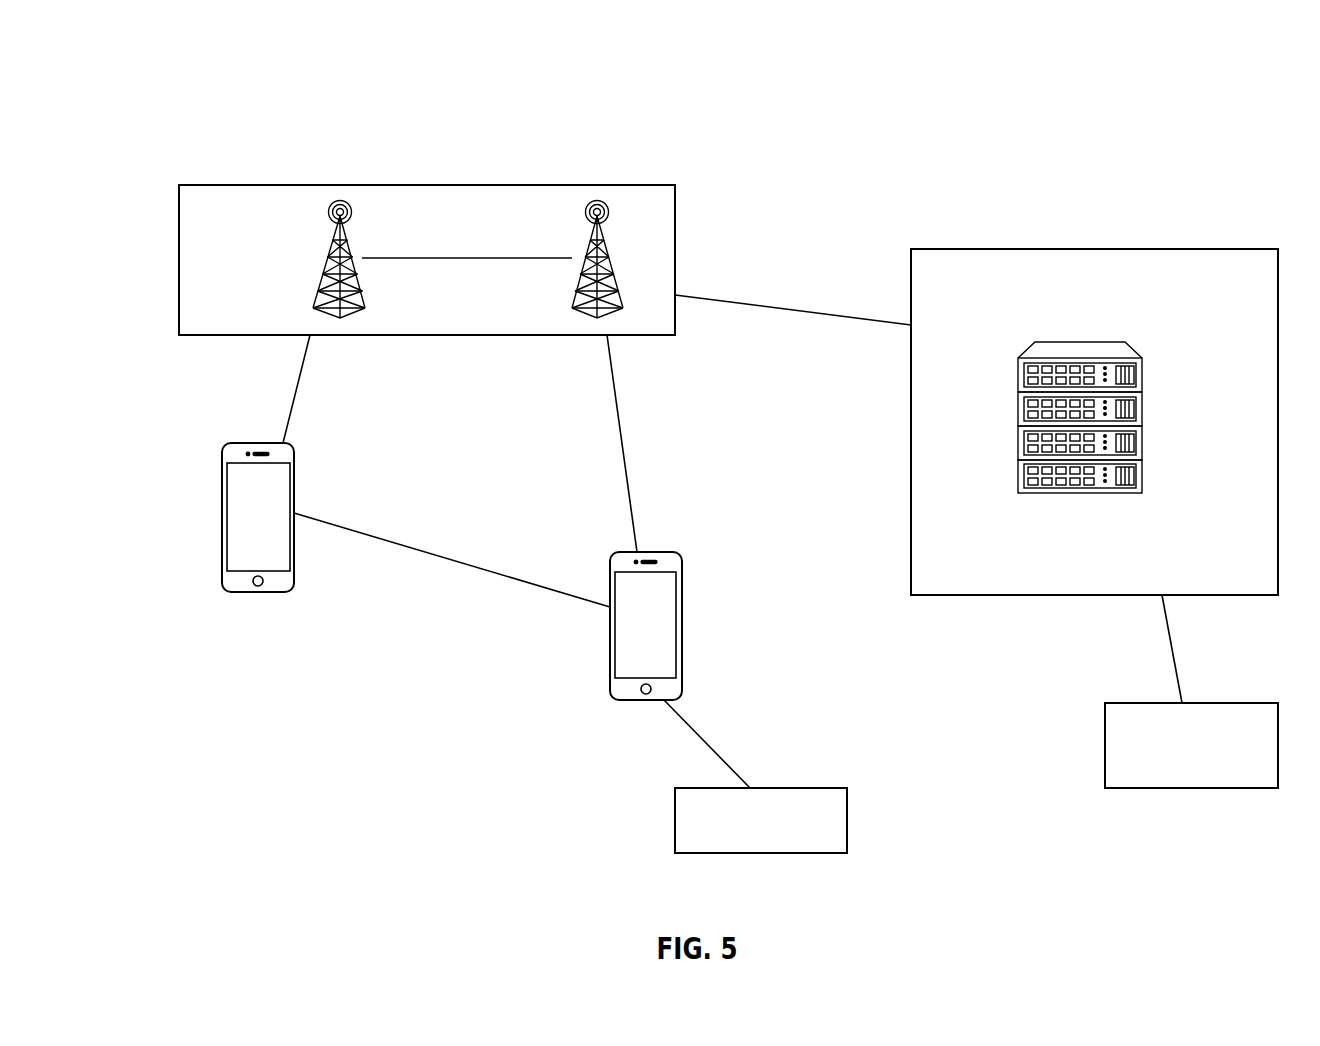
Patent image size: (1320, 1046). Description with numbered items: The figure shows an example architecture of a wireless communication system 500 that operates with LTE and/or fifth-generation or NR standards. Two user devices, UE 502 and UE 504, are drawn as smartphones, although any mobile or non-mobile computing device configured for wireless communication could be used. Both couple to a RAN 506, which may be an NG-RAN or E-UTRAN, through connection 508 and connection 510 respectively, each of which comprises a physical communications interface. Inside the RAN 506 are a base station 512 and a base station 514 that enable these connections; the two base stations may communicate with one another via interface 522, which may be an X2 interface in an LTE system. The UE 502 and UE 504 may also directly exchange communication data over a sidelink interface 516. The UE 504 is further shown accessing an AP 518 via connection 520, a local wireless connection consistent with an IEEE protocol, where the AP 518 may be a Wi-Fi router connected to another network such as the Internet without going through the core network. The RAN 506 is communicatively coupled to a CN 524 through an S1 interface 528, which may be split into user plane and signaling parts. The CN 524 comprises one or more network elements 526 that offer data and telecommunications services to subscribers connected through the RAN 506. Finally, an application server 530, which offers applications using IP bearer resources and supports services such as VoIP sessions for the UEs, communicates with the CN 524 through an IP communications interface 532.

The wireless communication system 500 is at (1195, 102).
The UE 502 is at (222, 473).
The UE 504 is at (682, 585).
The RAN 506 is at (430, 185).
The connection 508 is at (302, 378).
The connection 510 is at (620, 427).
The base station 512 is at (338, 223).
The base station 514 is at (597, 223).
The sidelink interface 516 is at (442, 552).
The AP 518 is at (675, 837).
The connection 520 is at (693, 733).
The interface 522 is at (420, 258).
The CN 524 is at (1098, 249).
The network elements 526 is at (1142, 375).
The S1 interface 528 is at (760, 305).
The application server 530 is at (1105, 722).
The IP communications interface 532 is at (1172, 662).